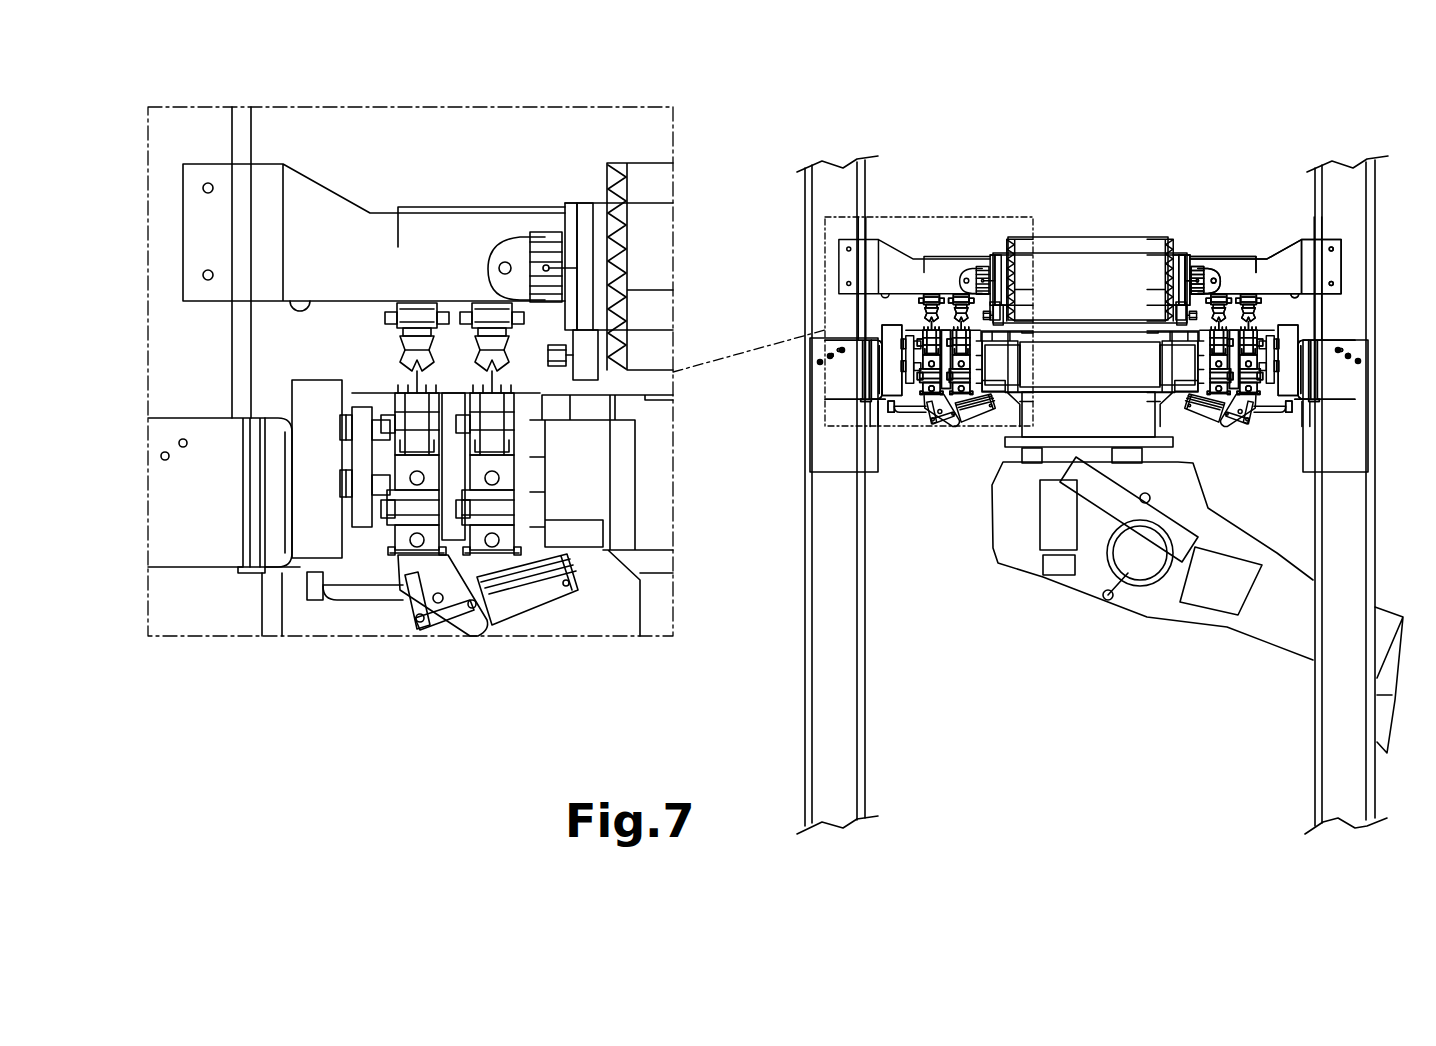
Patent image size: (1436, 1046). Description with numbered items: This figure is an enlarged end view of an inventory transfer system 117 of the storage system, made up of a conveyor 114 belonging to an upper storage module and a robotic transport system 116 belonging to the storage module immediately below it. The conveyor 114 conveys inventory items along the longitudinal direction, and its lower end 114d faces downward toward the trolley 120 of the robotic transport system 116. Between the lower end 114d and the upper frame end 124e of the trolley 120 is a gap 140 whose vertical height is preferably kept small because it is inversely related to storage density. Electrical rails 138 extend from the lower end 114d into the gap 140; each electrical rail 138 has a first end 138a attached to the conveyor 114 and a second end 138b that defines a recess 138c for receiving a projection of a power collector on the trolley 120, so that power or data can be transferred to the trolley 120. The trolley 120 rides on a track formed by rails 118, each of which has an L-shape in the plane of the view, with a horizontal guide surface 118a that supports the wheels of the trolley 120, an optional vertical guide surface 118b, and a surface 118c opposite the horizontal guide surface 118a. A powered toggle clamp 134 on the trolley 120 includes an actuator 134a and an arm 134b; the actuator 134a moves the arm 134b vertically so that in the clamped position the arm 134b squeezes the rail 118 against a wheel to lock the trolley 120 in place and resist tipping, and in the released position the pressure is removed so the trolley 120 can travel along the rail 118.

The conveyor 114 is at (1203, 247).
The lower end 114d is at (288, 300).
The robotic transport system 116 is at (1317, 377).
The inventory transfer system 117 is at (1090, 187).
The rail 118 is at (270, 482).
The horizontal guide surface 118a is at (283, 553).
The vertical guide surface 118b is at (282, 420).
The surface opposite the horizontal guide surface 118c is at (282, 573).
The trolley 120 is at (890, 313).
The upper frame end 124e is at (383, 393).
The clamp 134 is at (455, 625).
The actuator 134a is at (528, 595).
The arm 134b is at (360, 592).
The electrical rail 138 is at (960, 295).
The first end 138a is at (487, 302).
The second end 138b is at (395, 373).
The recess 138c is at (485, 350).
The gap 140 is at (300, 328).